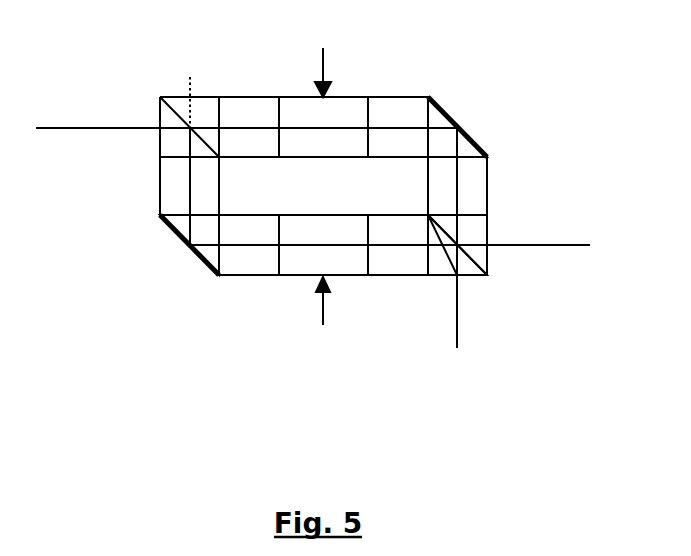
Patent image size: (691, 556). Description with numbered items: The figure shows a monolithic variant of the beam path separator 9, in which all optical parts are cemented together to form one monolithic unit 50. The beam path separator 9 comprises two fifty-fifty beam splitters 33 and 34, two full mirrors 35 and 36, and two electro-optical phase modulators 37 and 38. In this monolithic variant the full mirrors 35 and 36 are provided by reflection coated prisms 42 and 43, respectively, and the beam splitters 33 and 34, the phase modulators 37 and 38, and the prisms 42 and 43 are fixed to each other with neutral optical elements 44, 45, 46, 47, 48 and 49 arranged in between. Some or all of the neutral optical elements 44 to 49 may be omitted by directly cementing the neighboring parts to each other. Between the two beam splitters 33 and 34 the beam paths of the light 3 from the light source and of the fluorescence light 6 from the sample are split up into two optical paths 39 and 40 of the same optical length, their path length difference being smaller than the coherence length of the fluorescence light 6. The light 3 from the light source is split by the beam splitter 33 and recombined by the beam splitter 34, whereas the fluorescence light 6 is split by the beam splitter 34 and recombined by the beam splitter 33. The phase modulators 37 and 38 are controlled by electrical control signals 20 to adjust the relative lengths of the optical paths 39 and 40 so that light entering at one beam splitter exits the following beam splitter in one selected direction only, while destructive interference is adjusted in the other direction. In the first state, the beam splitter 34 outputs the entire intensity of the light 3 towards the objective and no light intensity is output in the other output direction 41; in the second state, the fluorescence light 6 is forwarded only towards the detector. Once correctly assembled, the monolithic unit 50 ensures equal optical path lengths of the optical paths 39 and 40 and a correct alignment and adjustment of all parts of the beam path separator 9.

The light from the light source 3 is at (457, 320).
The fluorescence light 6 is at (547, 248).
The beam path separator 9 is at (563, 94).
The electrical control signals 20 is at (322, 78).
The 50:50 beam splitter 33 is at (497, 217).
The 50:50 beam splitter 34 is at (162, 137).
The full mirror 35 is at (440, 107).
The full mirror 36 is at (197, 255).
The electro-optical phase modulator 37 is at (350, 97).
The electro-optical phase modulator 38 is at (355, 277).
The optical path 39 is at (233, 120).
The optical path 40 is at (253, 247).
The other output direction 41 is at (188, 82).
The reflection coated prism 42 is at (467, 150).
The reflection coated prism 43 is at (180, 223).
The neutral optical element 44 is at (472, 182).
The neutral optical element 45 is at (392, 113).
The neutral optical element 46 is at (255, 110).
The neutral optical element 47 is at (405, 259).
The neutral optical element 48 is at (232, 267).
The neutral optical element 49 is at (170, 200).
The monolithic unit 50 is at (495, 299).